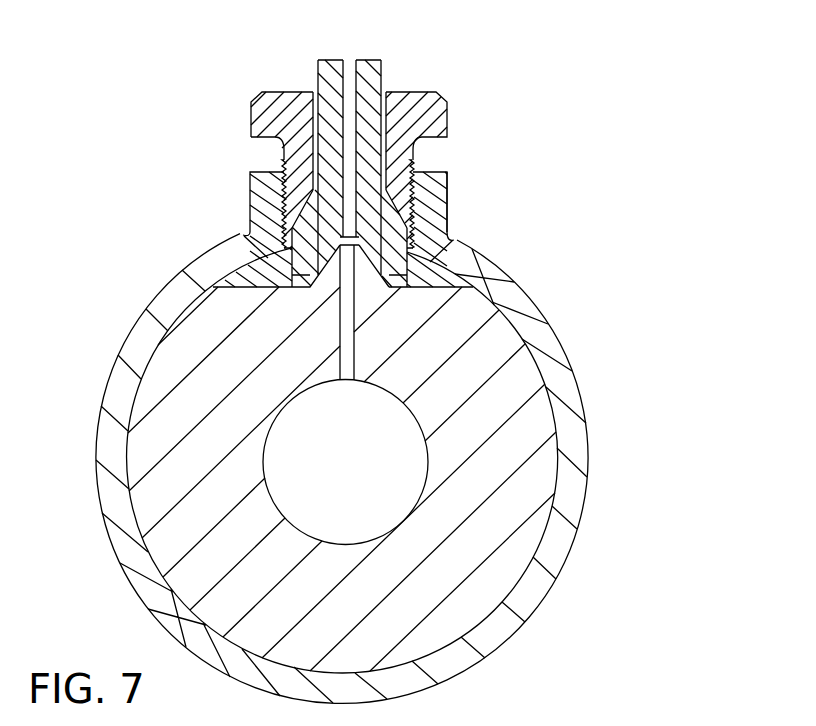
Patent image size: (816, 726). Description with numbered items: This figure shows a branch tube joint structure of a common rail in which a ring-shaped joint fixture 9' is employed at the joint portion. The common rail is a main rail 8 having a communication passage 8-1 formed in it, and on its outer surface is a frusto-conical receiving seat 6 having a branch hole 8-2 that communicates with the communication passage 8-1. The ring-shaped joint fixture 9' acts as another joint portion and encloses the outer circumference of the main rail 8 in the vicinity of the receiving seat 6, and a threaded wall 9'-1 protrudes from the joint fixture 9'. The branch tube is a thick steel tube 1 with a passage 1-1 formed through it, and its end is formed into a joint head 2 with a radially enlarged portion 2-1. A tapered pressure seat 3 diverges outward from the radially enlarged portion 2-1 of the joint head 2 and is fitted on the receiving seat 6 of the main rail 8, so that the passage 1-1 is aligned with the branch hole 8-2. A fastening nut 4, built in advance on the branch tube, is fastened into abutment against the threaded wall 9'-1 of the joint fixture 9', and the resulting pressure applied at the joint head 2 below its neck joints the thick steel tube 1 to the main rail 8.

The thick steel tube 1 is at (381, 79).
The passage 1-1 is at (350, 64).
The joint head 2 is at (418, 273).
The radially enlarged portion 2-1 is at (418, 252).
The pressure seat 3 is at (299, 225).
The fastening nut 4 is at (432, 119).
The receiving seat 6 is at (242, 239).
The main rail 8 is at (528, 385).
The communication passage 8-1 is at (417, 470).
The branch hole 8-2 is at (347, 382).
The ring-shaped joint fixture 9' is at (353, 469).
The threaded wall 9'-1 is at (483, 202).